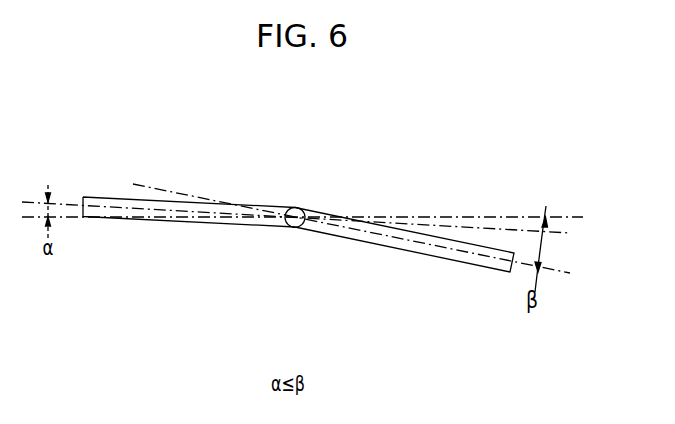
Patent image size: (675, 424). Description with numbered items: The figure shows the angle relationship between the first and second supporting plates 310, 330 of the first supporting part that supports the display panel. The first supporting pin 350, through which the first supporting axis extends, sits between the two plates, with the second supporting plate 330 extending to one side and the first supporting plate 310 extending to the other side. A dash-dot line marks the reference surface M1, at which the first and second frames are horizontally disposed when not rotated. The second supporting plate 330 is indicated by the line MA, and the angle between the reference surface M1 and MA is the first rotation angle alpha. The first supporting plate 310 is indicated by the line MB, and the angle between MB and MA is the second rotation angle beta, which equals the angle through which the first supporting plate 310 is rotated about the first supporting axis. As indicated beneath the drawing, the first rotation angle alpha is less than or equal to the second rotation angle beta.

The second supporting plate 330 is at (96, 197).
The first supporting plate 310 is at (420, 252).
The first supporting pin 350 is at (296, 228).
The reference surface M1 is at (317, 217).
The second supporting plate orientation MA is at (570, 233).
The first supporting plate orientation MB is at (570, 273).